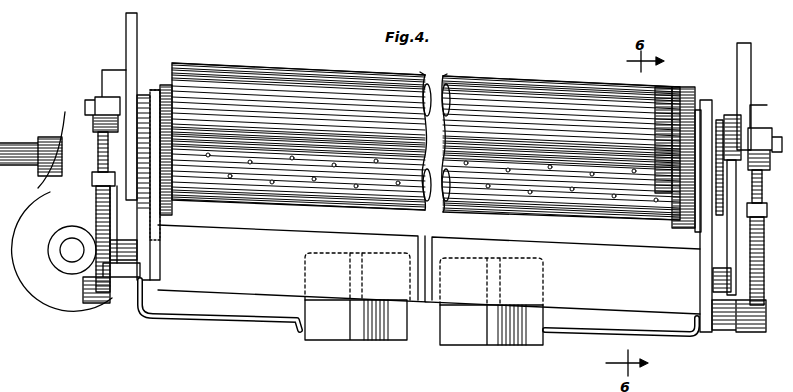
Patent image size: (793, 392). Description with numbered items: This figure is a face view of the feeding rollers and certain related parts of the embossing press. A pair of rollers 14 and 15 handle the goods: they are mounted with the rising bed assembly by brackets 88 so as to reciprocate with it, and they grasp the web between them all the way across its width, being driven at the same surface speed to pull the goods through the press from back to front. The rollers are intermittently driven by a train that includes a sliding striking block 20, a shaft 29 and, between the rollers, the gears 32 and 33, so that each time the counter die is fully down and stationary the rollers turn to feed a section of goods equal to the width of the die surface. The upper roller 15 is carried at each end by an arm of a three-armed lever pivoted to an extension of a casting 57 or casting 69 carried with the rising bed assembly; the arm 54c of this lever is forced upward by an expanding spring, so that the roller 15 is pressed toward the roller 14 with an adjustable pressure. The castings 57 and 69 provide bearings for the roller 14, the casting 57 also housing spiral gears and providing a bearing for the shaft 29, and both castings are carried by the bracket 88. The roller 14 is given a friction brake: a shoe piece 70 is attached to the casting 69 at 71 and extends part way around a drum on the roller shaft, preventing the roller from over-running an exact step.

The lower roller 14 is at (447, 212).
The upper roller 15 is at (449, 84).
The sliding striking block 20 is at (420, 308).
The shaft 29 is at (72, 252).
The gear 32 is at (684, 225).
The gear 33 is at (684, 87).
The arm of three-armed lever 54c is at (161, 153).
The casting 57 is at (50, 287).
The casting 69 is at (702, 302).
The shoe piece 70 is at (734, 227).
The attachment point 71 is at (712, 280).
The bracket 88 is at (455, 338).